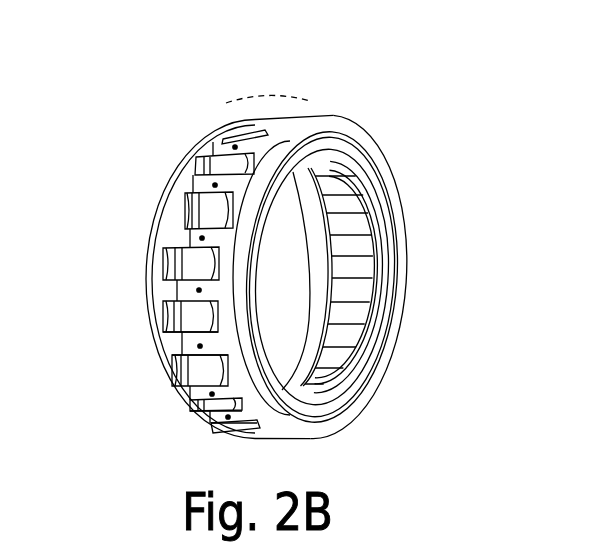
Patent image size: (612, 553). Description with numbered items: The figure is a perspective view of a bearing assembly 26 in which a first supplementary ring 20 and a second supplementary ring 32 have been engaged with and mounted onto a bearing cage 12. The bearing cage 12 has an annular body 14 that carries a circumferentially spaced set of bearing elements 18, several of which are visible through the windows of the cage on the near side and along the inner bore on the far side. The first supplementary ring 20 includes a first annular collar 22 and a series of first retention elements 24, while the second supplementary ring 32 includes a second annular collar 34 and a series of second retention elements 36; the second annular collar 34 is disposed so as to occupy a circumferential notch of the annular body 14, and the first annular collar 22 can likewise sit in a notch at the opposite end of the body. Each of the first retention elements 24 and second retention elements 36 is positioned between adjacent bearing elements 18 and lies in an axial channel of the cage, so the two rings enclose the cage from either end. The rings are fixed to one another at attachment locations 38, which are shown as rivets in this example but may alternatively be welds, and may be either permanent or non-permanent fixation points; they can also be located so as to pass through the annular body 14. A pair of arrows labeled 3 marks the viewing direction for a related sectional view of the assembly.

The section view direction arrows 3 is at (222, 94).
The bearing cage 12 is at (355, 316).
The annular body 14 is at (350, 270).
The bearing elements 18 is at (205, 370).
The first supplementary ring 20 is at (172, 163).
The first annular collar 22 is at (147, 310).
The first retention elements 24 is at (176, 226).
The bearing assembly 26 is at (148, 92).
The second supplementary ring 32 is at (392, 158).
The second annular collar 34 is at (348, 126).
The second retention elements 36 is at (183, 343).
The attachment locations 38 is at (199, 237).